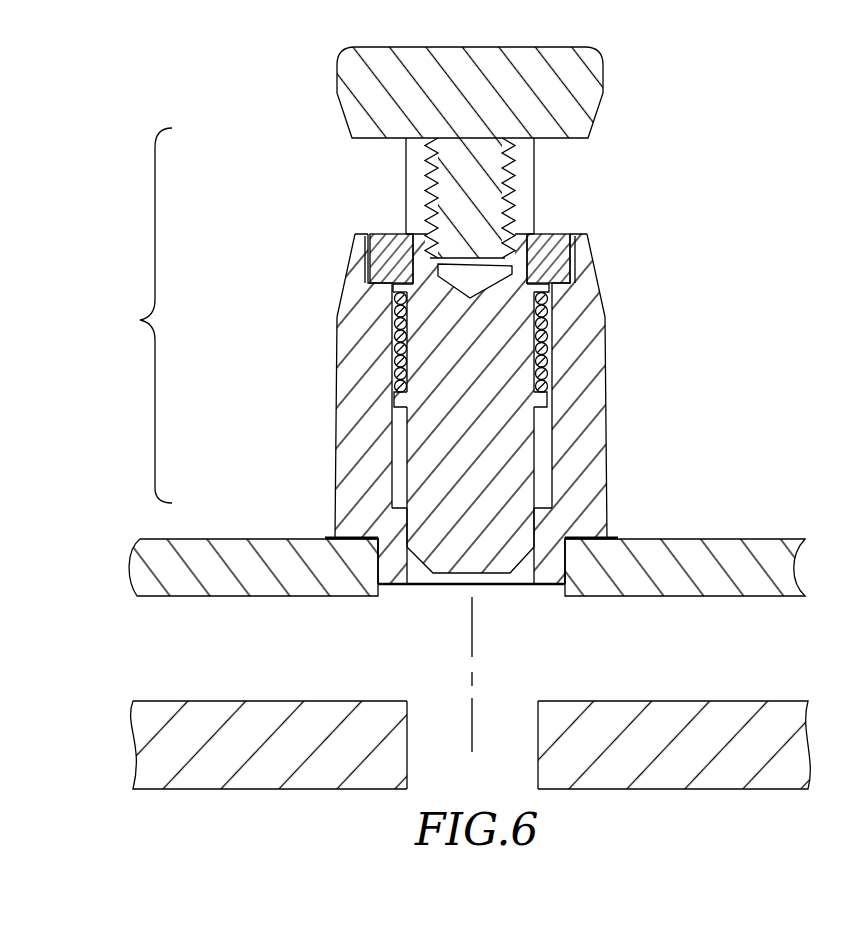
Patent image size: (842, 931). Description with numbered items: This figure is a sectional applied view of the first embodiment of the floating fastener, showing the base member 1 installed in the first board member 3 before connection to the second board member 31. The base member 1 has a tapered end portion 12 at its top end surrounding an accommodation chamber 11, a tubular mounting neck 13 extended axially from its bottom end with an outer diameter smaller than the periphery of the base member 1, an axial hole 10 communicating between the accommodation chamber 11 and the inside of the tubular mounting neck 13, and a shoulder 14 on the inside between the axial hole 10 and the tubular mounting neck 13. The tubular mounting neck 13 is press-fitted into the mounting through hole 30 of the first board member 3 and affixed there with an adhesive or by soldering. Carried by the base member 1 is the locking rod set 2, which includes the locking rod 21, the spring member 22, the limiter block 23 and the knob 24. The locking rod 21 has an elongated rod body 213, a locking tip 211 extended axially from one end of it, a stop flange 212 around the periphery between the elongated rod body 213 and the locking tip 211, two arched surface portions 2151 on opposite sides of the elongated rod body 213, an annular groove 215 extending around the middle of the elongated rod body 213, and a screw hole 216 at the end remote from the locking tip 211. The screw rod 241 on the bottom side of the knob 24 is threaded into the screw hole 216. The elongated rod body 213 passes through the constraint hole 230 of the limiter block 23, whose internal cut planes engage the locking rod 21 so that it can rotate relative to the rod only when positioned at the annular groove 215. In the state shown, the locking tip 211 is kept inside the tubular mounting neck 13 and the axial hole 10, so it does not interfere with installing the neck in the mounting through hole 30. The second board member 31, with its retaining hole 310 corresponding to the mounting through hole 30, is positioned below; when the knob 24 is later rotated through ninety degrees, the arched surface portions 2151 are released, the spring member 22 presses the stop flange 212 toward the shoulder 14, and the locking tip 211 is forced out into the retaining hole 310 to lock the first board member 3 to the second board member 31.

The base member 1 is at (578, 383).
The locking rod set 2 is at (147, 315).
The first board member 3 is at (765, 558).
The axial hole 10 is at (556, 353).
The accommodation chamber 11 is at (585, 233).
The tapered end portion 12 is at (598, 280).
The tubular mounting neck 13 is at (580, 586).
The shoulder 14 is at (550, 507).
The locking rod 21 is at (400, 471).
The spring member 22 is at (392, 385).
The limiter block 23 is at (557, 256).
The knob 24 is at (592, 103).
The mounting through hole 30 is at (528, 590).
The second board member 31 is at (735, 718).
The locking tip 211 is at (467, 565).
The stop flange 212 is at (394, 403).
The elongated rod body 213 is at (412, 161).
The annular groove 215 is at (393, 290).
The screw hole 216 is at (506, 268).
The constraint hole 230 is at (367, 256).
The screw rod 241 is at (462, 216).
The retaining hole 310 is at (437, 737).
The arched surface portions 2151 is at (393, 302).